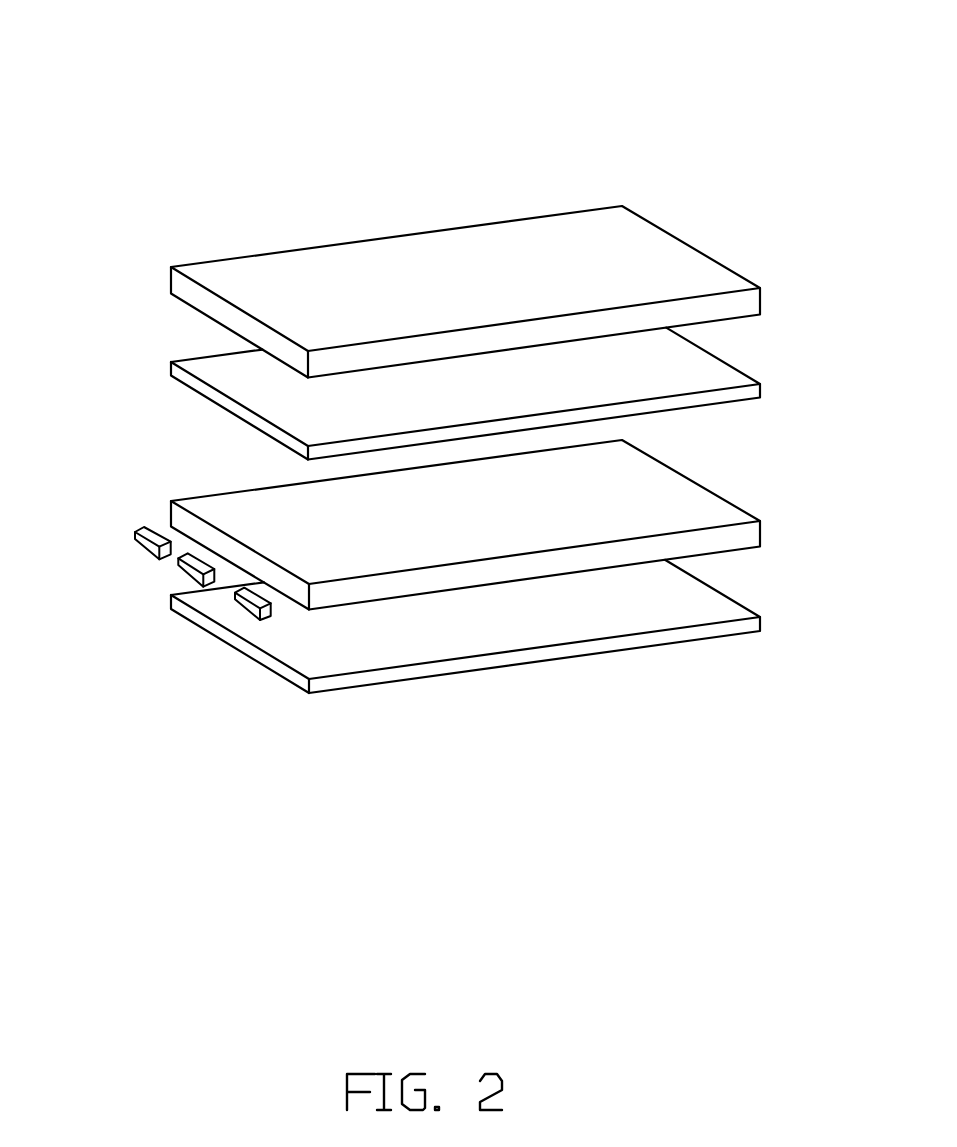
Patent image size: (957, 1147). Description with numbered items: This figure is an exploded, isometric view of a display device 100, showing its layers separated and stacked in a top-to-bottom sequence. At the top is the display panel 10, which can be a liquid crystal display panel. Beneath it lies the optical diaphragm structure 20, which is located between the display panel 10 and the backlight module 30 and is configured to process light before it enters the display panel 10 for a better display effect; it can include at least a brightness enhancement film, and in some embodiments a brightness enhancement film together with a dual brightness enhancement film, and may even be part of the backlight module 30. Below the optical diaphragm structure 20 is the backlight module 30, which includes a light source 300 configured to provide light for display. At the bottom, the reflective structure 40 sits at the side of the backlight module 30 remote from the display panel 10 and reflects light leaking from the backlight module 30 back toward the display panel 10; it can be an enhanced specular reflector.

The display device 100 is at (430, 39).
The display panel 10 is at (695, 270).
The optical diaphragm structure 20 is at (710, 365).
The backlight module 30 is at (695, 507).
The reflective structure 40 is at (695, 607).
The light source 300 is at (141, 543).